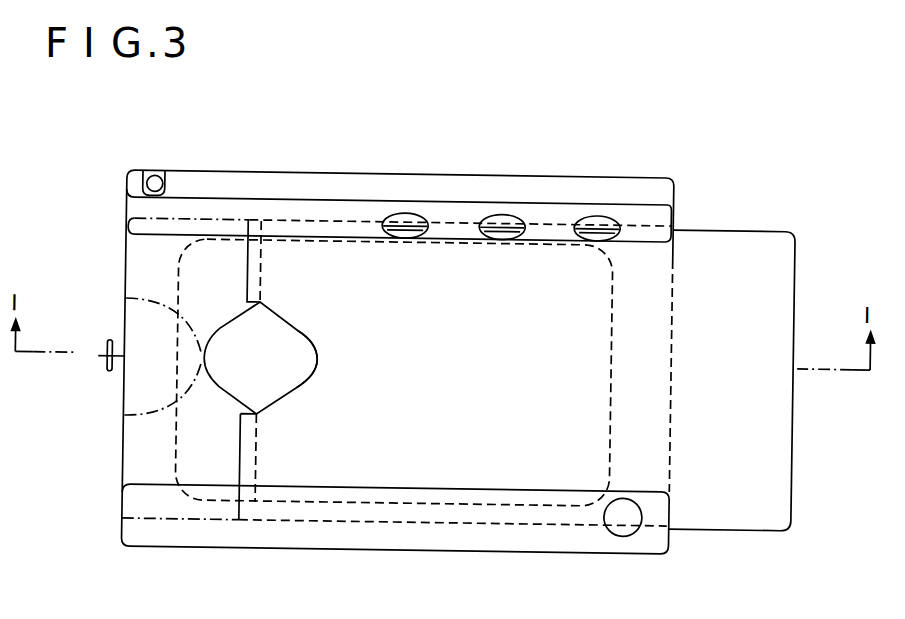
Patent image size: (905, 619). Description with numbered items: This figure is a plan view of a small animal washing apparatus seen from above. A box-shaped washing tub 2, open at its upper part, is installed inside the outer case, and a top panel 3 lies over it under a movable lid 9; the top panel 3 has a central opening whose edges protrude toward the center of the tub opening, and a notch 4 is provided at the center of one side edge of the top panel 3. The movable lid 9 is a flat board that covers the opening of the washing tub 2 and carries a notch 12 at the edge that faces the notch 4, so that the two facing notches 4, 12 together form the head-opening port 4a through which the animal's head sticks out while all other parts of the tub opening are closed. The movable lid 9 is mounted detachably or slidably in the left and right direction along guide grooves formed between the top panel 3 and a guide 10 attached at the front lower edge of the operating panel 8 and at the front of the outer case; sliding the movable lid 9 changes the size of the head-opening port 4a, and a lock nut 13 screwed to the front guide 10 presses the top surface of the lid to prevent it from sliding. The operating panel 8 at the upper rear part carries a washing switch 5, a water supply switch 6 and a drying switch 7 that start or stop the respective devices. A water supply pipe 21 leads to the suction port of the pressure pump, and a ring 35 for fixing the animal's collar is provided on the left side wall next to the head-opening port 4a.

The washing tub 2 is at (449, 501).
The top panel 3 is at (146, 267).
The notch 4 is at (239, 325).
The head-opening port 4a is at (280, 338).
The washing switch 5 is at (423, 213).
The water supply switch 6 is at (513, 214).
The drying switch 7 is at (608, 213).
The operating panel 8 is at (373, 186).
The movable lid 9 is at (768, 278).
The guide 10 is at (331, 229).
The notch 12 is at (304, 331).
The lock nut 13 is at (643, 520).
The water supply pipe 21 is at (160, 172).
The ring 35 is at (97, 364).